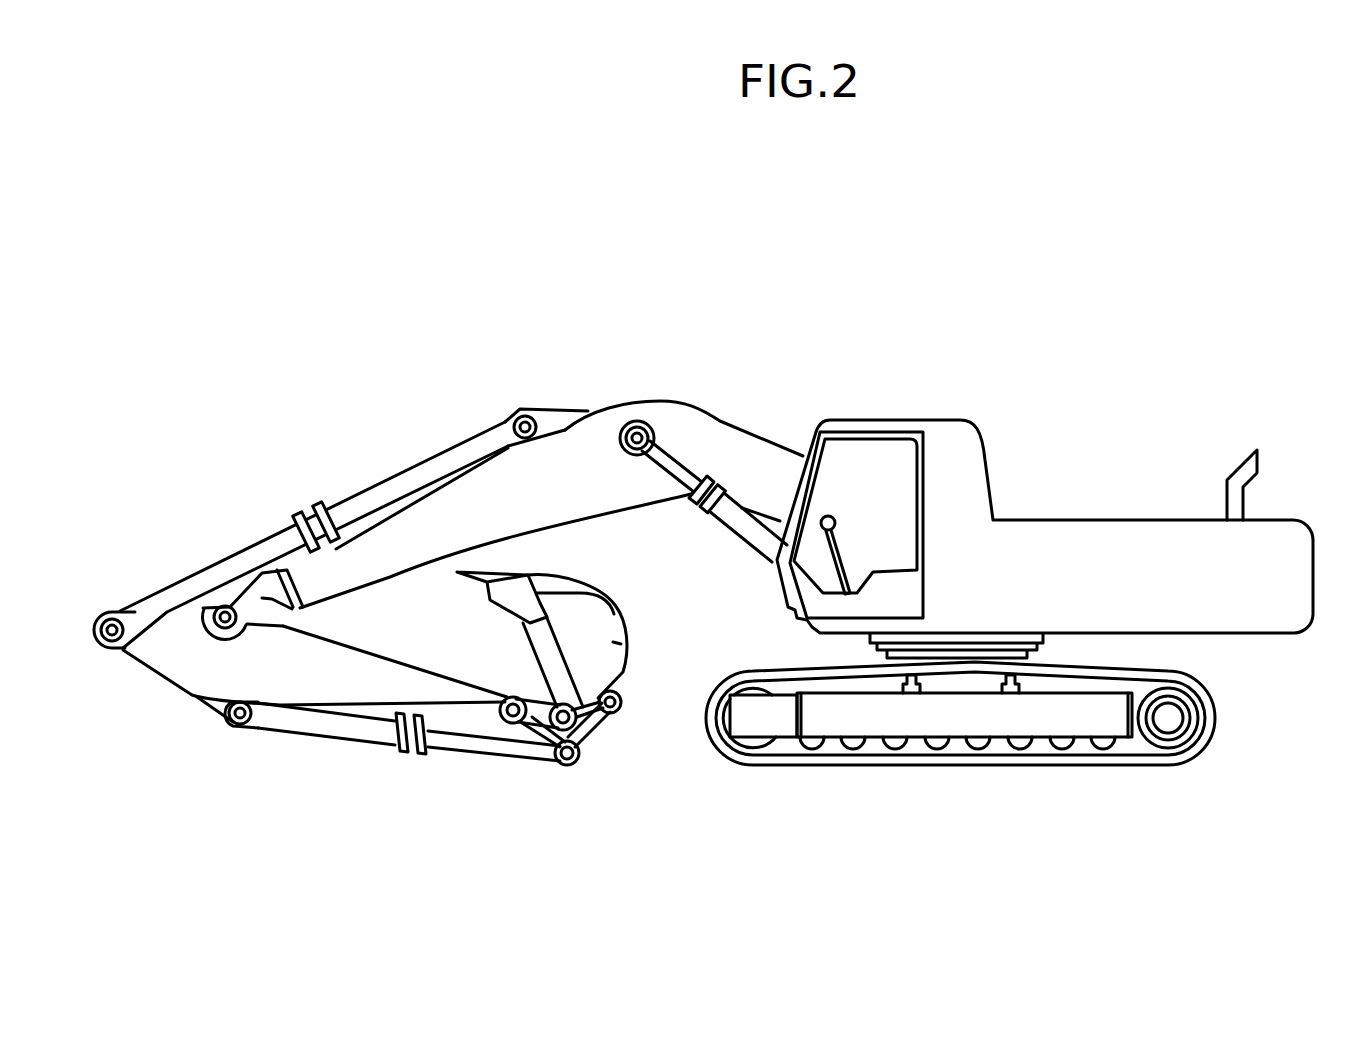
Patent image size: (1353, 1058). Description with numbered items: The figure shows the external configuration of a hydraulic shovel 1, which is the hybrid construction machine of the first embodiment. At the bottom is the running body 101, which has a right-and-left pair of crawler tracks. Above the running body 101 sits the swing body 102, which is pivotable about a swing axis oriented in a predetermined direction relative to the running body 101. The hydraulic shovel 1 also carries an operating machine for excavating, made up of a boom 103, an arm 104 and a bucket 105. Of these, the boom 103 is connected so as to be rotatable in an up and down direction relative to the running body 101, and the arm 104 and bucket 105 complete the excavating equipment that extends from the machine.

The hydraulic shovel 1 is at (1089, 301).
The running body 101 is at (1040, 713).
The swing body 102 is at (875, 430).
The boom 103 is at (570, 452).
The arm 104 is at (322, 688).
The bucket 105 is at (613, 643).